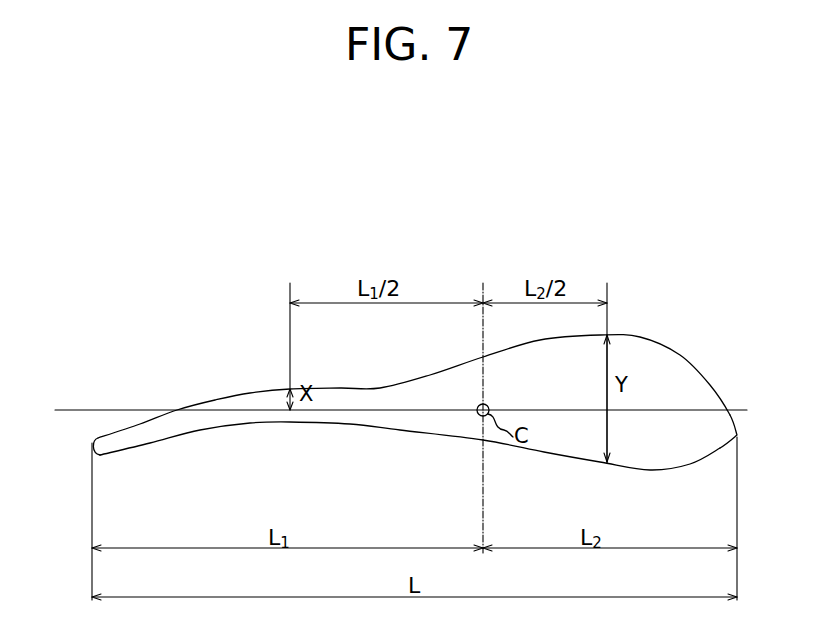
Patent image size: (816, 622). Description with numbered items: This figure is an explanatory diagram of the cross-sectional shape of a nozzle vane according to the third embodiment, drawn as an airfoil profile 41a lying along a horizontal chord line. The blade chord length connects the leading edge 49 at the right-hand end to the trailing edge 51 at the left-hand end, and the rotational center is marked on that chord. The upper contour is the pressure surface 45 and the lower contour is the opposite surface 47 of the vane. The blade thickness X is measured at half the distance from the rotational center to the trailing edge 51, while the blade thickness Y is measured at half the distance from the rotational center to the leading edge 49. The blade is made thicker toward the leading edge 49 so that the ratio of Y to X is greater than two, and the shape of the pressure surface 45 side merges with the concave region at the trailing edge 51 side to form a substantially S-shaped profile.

The blade profile 41a is at (688, 383).
The pressure surface 45 is at (264, 388).
The lower surface 47 is at (240, 425).
The trailing edge 51 is at (92, 447).
The leading edge 49 is at (740, 437).